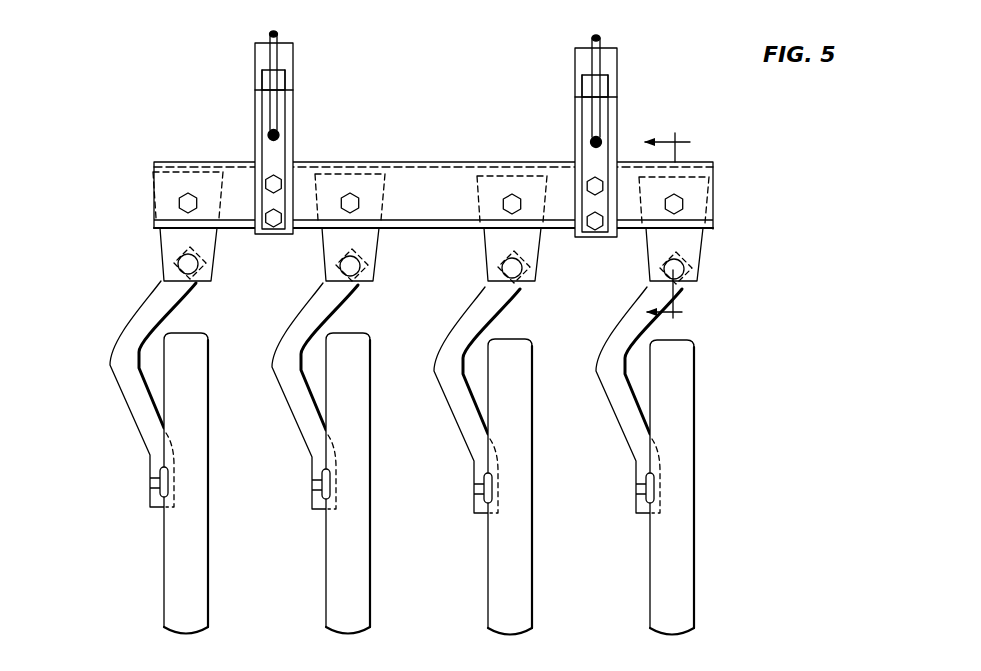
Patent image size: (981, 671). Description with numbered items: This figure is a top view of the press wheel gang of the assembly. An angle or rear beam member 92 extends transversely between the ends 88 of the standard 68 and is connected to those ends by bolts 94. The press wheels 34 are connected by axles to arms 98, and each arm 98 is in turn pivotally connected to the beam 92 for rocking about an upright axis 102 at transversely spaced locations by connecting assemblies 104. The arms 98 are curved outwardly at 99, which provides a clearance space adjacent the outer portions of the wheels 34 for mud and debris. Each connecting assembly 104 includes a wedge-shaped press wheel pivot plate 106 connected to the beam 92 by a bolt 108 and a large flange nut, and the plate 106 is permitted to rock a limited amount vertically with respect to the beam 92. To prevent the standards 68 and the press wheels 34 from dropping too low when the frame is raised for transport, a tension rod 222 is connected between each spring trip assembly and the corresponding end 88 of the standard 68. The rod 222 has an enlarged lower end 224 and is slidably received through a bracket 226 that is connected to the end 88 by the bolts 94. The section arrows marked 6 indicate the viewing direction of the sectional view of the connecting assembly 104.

The section line of FIG. 6 is at (671, 228).
The press wheels 34 is at (325, 578).
The standard 68 is at (291, 54).
The ends of the standard 88 is at (287, 127).
The angle or rear beam member 92 is at (236, 178).
The bolts 94 is at (282, 212).
The arms 98 is at (111, 366).
The outwardly curved portion of the arms 99 is at (153, 352).
The upright axes 102 is at (199, 263).
The connecting assemblies 104 is at (146, 245).
The press wheel pivot plate 106 is at (160, 253).
The bolt 108 is at (188, 192).
The tension rod 222 is at (271, 33).
The enlarged lower end 224 is at (279, 131).
The bracket 226 is at (262, 82).